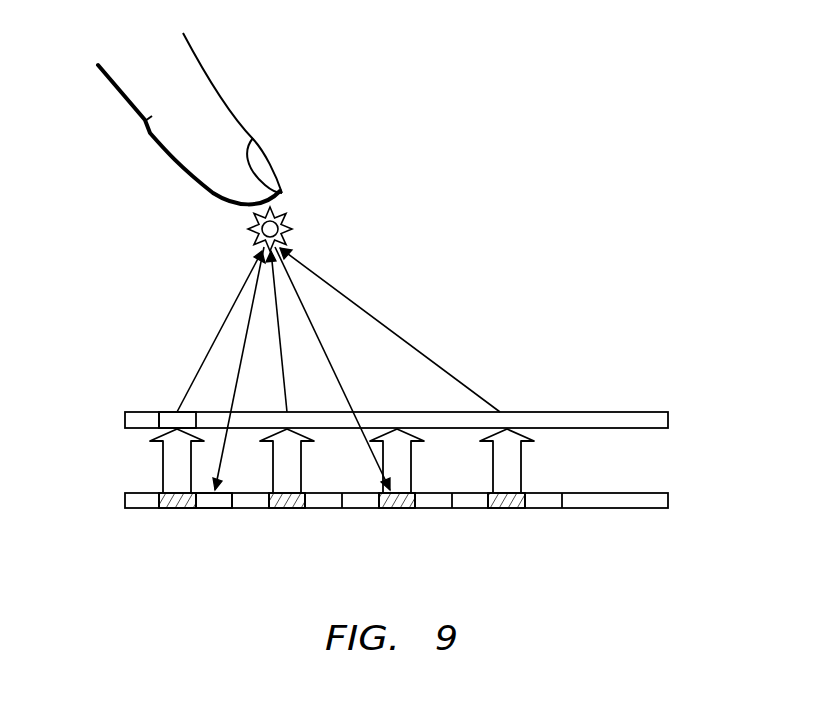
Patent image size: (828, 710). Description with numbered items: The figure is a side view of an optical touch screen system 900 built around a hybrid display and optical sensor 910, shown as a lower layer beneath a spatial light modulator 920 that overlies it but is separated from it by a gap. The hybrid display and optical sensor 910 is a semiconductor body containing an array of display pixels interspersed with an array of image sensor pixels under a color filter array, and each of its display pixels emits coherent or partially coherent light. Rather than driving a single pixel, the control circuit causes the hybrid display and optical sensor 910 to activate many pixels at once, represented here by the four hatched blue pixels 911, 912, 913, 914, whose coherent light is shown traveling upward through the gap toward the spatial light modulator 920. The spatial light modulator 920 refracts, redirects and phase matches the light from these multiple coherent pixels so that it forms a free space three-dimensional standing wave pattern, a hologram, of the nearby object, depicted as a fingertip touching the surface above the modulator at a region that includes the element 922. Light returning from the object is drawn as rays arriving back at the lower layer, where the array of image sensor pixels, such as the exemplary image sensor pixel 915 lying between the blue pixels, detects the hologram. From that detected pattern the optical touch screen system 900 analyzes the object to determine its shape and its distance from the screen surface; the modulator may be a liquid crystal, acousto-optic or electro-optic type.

The optical touch screen system 900 is at (590, 129).
The hybrid display and optical sensor 910 is at (355, 528).
The blue pixel 911 is at (175, 509).
The blue pixel 912 is at (291, 509).
The blue pixel 913 is at (408, 509).
The blue pixel 914 is at (508, 509).
The image sensor pixel 915 is at (213, 509).
The spatial light modulator 920 is at (355, 385).
The light emitting element 922 is at (165, 412).